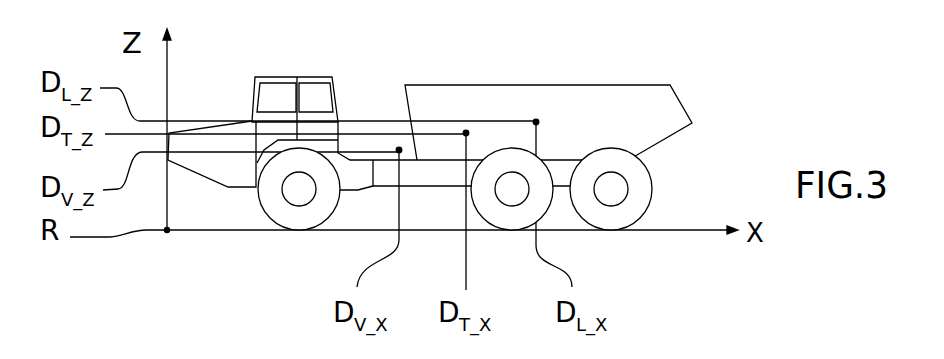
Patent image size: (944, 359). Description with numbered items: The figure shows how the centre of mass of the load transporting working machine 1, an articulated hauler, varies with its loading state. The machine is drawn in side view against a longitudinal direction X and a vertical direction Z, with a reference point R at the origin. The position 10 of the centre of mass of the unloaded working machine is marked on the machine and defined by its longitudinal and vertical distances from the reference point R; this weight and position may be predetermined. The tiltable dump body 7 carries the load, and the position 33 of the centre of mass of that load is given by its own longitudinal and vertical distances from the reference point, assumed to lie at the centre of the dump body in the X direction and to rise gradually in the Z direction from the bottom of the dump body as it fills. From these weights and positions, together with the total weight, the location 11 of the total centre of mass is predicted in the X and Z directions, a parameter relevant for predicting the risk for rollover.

The load transporting working machine 1 is at (782, 111).
The dump body 7 is at (594, 123).
The position of the centre of mass of the unloaded working machine 10 is at (399, 150).
The location of the total centre of mass 11 is at (466, 133).
The position of the centre of mass of the load 33 is at (536, 122).